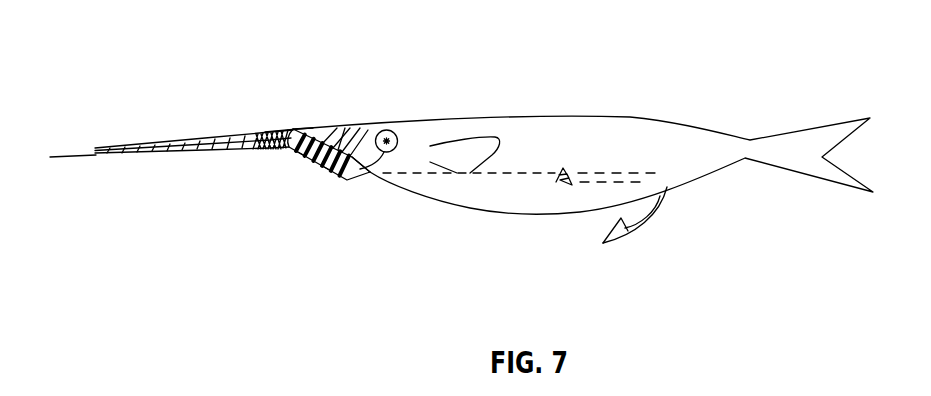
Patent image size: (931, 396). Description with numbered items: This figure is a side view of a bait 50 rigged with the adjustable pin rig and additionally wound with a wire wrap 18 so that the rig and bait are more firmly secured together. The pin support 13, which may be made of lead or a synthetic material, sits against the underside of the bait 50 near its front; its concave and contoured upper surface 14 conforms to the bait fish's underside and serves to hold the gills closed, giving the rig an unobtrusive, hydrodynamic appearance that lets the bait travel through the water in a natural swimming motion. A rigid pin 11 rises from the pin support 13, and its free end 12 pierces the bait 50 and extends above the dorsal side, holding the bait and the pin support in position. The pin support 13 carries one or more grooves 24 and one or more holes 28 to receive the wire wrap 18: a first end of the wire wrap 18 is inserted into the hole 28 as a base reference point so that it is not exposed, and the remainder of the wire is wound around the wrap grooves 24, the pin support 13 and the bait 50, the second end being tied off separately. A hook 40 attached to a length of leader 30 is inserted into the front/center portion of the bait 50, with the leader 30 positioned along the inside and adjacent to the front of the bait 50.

The pin 11 is at (330, 108).
The free end 12 is at (320, 132).
The pin support 13 is at (376, 176).
The upper surface 14 is at (313, 128).
The wire wrap 18 is at (222, 138).
The groove 24 is at (303, 158).
The hole 28 is at (334, 174).
The leader 30 is at (90, 157).
The hook 40 is at (650, 222).
The bait 50 is at (628, 117).